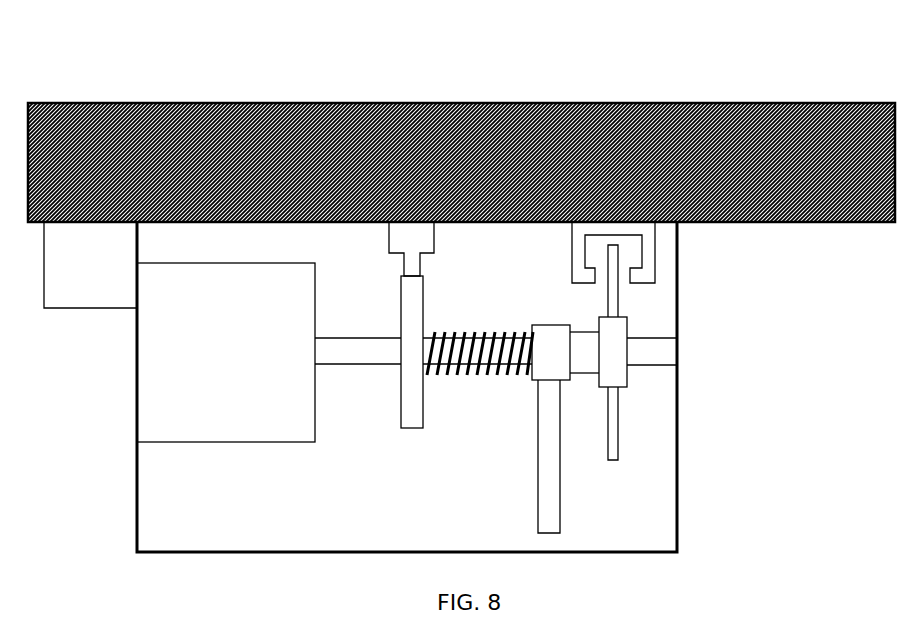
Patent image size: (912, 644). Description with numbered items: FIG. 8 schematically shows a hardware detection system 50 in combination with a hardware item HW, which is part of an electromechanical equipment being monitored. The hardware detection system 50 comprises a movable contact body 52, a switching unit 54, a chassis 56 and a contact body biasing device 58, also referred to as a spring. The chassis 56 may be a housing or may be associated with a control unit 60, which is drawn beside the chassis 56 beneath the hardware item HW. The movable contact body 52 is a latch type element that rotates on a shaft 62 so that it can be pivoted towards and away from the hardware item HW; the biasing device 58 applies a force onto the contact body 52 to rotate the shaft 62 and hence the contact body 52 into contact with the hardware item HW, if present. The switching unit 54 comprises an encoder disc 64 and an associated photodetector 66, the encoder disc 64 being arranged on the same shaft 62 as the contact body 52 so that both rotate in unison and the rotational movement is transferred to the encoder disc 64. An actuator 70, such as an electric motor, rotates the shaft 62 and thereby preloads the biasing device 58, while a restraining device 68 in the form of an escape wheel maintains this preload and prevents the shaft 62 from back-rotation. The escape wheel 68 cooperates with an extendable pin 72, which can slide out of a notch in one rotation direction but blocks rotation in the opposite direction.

The hardware detection system 50 is at (747, 74).
The hardware item HW is at (103, 118).
The movable contact body 52 is at (562, 495).
The switching unit 54 is at (782, 240).
The chassis 56 is at (679, 535).
The contact body biasing device 58 is at (474, 323).
The control unit 60 is at (110, 285).
The shaft 62 is at (679, 353).
The encoder disc 64 is at (620, 424).
The photodetector 66 is at (657, 252).
The restraining device 68 is at (413, 431).
The actuator 70 is at (242, 260).
The extendable pin 72 is at (408, 263).